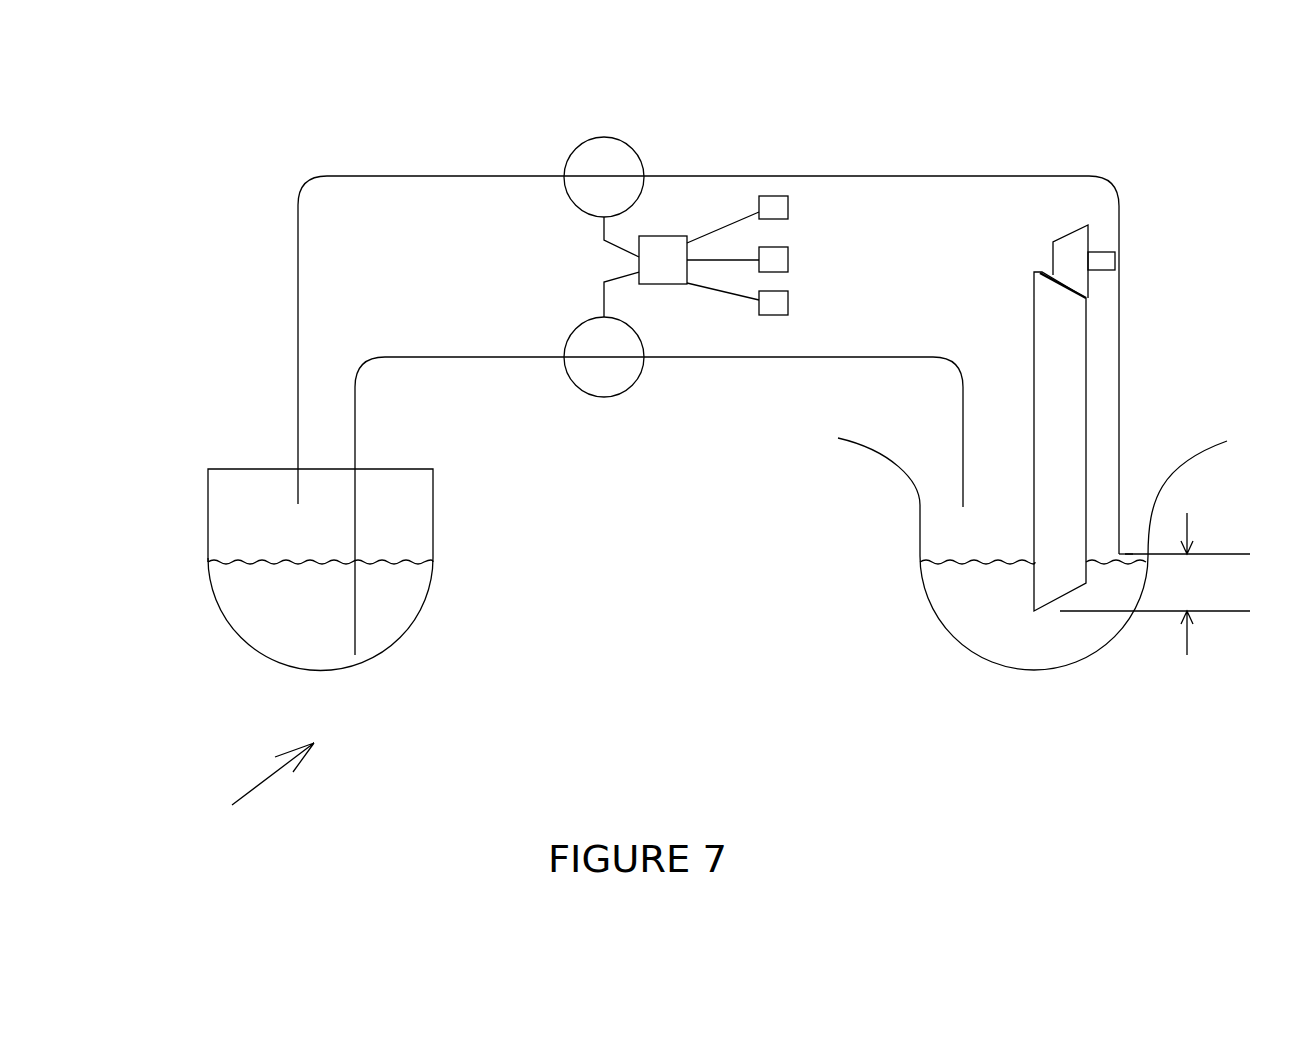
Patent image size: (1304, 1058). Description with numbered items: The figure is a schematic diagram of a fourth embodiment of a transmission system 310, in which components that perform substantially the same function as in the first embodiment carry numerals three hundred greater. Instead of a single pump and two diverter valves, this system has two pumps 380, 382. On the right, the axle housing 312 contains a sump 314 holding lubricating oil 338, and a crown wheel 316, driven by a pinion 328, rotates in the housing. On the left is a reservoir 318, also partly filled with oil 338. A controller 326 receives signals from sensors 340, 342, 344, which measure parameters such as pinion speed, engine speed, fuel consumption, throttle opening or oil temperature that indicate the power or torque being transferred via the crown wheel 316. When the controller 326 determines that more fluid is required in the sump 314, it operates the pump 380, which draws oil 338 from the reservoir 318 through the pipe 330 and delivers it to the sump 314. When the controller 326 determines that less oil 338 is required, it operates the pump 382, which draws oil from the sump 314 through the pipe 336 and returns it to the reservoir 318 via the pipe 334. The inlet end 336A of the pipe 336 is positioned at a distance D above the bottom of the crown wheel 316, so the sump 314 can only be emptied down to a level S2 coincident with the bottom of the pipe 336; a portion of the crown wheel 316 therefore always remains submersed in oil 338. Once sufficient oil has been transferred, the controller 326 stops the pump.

The transmission system 310 is at (252, 789).
The axle housing 312 is at (916, 496).
The sump 314 is at (1045, 670).
The crown wheel 316 is at (1045, 407).
The reservoir 318 is at (433, 527).
The controller 326 is at (665, 250).
The pinion 328 is at (1080, 248).
The pipe 330 is at (415, 360).
The pipe 334 is at (297, 285).
The pipe 336 is at (1119, 317).
The inlet end 336A is at (1133, 550).
The oil 338 is at (408, 618).
The sensor 340 is at (788, 205).
The sensor 342 is at (788, 262).
The sensor 344 is at (788, 309).
The pump 380 is at (617, 387).
The pump 382 is at (592, 147).
The level S2 is at (1205, 554).
The distance D is at (1155, 584).